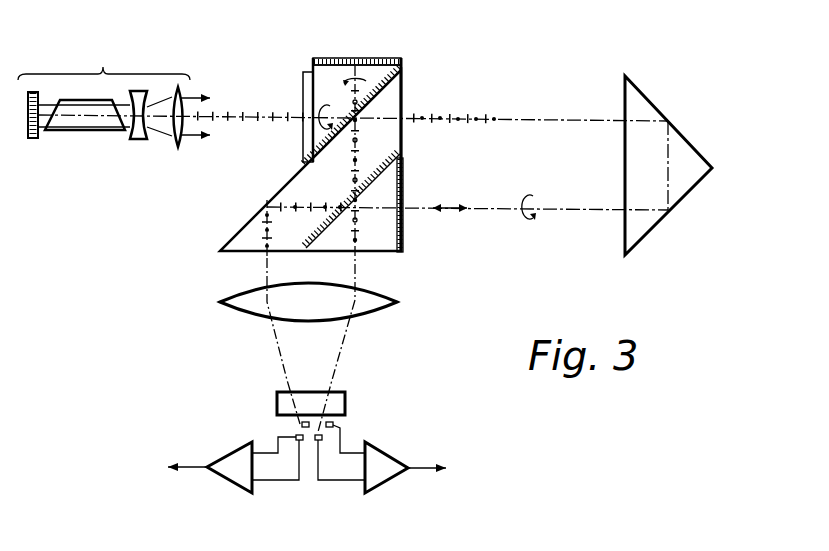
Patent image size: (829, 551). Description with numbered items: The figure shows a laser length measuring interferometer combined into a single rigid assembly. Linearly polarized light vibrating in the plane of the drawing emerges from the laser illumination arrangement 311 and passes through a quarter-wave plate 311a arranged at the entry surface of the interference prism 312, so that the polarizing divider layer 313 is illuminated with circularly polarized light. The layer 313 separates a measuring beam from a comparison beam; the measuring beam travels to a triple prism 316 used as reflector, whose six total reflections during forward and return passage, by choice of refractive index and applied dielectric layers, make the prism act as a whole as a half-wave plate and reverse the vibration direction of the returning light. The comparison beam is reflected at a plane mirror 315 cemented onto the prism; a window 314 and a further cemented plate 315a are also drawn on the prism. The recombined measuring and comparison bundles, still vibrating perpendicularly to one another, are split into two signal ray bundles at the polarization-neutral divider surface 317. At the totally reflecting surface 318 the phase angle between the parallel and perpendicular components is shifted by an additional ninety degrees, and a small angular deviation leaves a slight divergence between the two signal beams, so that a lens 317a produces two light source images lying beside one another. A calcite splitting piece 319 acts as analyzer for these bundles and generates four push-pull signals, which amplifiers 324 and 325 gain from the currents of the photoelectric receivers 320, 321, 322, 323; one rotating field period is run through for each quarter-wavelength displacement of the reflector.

The laser illumination arrangement 311 is at (114, 93).
The λ/4 plate 311a is at (306, 88).
The interference prism 312 is at (303, 182).
The polarizing divider layer 313 is at (404, 95).
The window 314 is at (333, 64).
The plane mirror 315 is at (374, 62).
The reflecting plate 315a is at (404, 234).
The triple prism 316 is at (690, 176).
The polarization-neutral divider surface 317 is at (404, 178).
The lens 317a is at (376, 304).
The totally reflecting surface 318 is at (247, 229).
The calcite splitting piece 319 is at (340, 402).
The photoelectric receiver 320 is at (300, 424).
The photoelectric receiver 321 is at (280, 436).
The photoelectric receiver 322 is at (318, 442).
The photoelectric receiver 323 is at (335, 426).
The amplifier 324 is at (238, 475).
The amplifier 325 is at (390, 475).